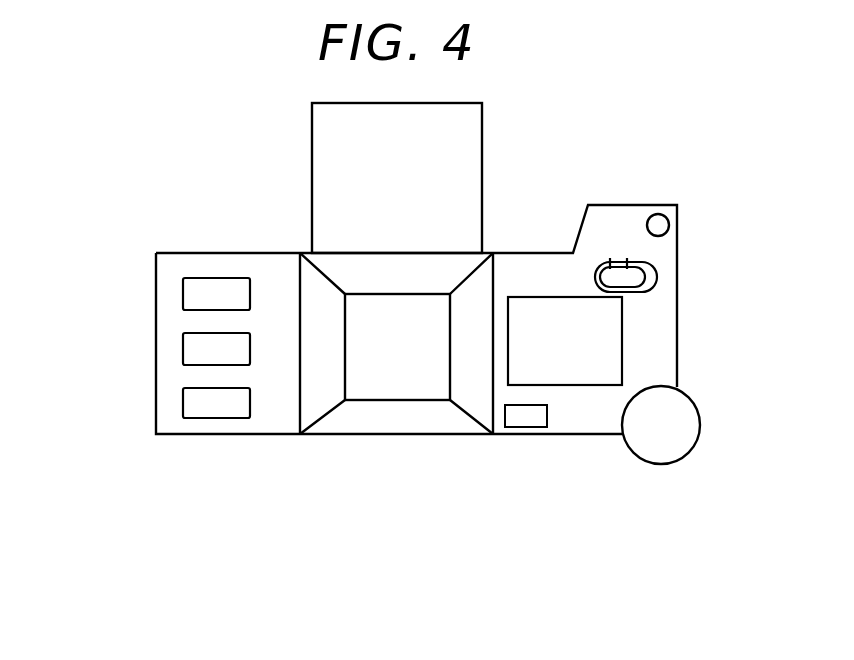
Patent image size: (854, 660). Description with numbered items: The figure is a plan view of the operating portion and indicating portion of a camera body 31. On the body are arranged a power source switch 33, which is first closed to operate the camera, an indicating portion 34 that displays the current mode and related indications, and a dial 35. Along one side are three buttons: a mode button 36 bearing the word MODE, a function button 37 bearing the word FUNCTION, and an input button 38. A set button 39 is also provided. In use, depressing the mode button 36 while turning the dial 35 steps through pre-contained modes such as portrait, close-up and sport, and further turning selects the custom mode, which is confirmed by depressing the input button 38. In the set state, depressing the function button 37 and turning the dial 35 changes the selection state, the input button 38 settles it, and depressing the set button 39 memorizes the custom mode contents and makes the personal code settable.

The camera body 31 is at (628, 205).
The power source switch 33 is at (635, 276).
The indicating portion 34 is at (608, 386).
The dial 35 is at (702, 414).
The mode button 36 is at (183, 292).
The function button 37 is at (183, 352).
The input button 38 is at (200, 418).
The set button 39 is at (533, 428).